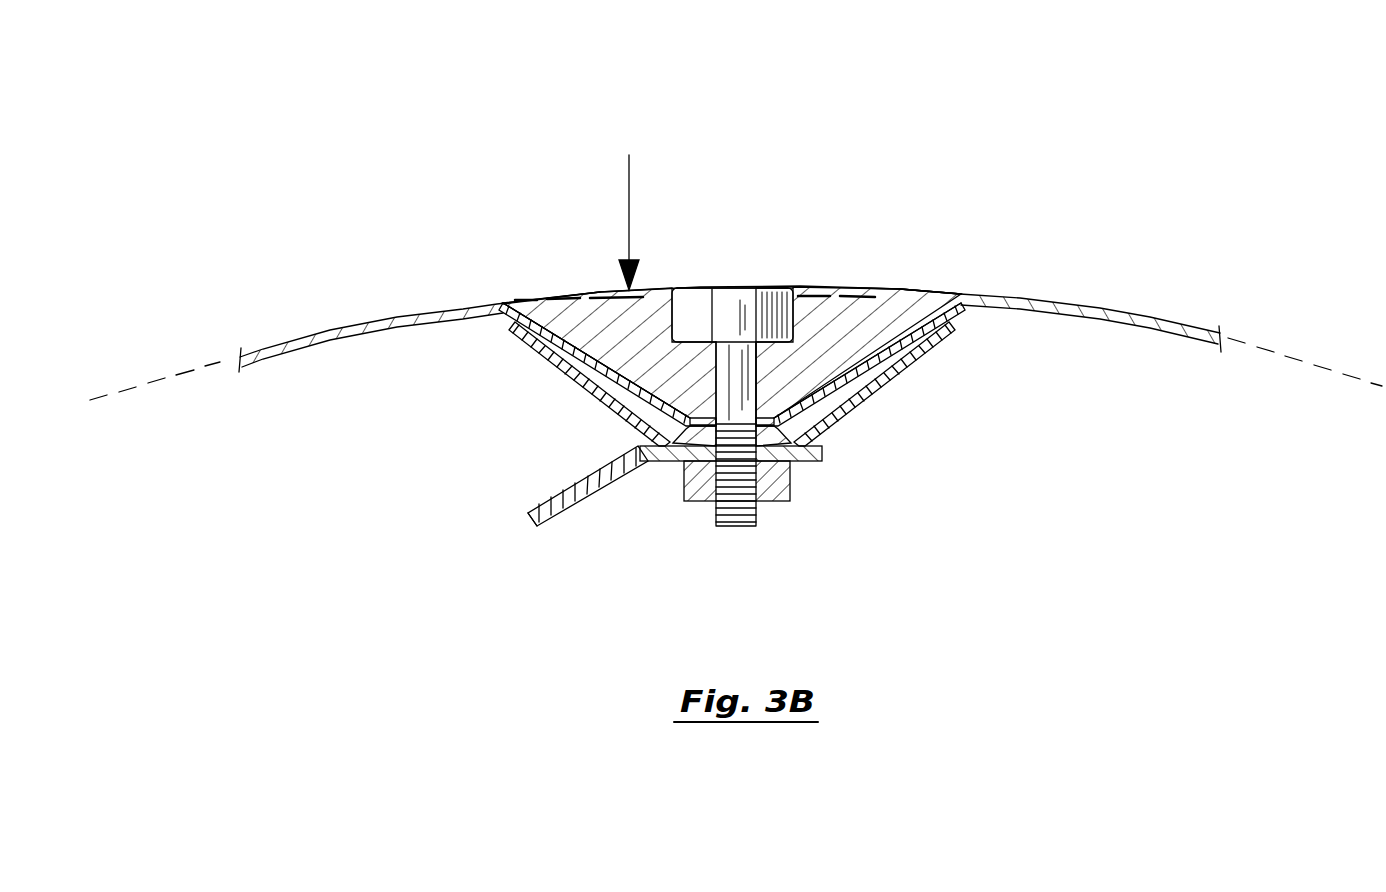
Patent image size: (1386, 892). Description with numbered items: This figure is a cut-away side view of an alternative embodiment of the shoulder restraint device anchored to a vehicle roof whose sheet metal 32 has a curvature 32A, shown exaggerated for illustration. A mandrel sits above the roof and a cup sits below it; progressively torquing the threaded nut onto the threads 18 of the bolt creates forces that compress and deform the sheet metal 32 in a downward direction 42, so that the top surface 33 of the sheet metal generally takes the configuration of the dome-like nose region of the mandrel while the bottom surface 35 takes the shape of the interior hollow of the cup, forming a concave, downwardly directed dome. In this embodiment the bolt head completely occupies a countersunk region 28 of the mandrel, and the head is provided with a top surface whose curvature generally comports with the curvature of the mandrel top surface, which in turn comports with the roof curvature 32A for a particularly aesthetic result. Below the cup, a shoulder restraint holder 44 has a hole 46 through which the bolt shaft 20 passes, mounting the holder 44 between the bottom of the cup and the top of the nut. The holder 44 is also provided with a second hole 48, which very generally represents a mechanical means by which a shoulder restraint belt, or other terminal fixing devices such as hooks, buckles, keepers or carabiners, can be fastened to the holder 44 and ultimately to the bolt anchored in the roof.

The sheet metal 32 is at (333, 338).
The curvature 32A is at (205, 374).
The top surface of the sheet metal 33 is at (903, 294).
The countersunk region 28 is at (553, 327).
The bottom surface of the sheet metal 35 is at (840, 382).
The threads of the bolt 18 is at (760, 517).
The bolt shaft 20 is at (758, 368).
The downward direction 42 is at (624, 207).
The hole 46 is at (745, 458).
The second hole 48 is at (580, 490).
The shoulder restraint holder 44 is at (547, 524).